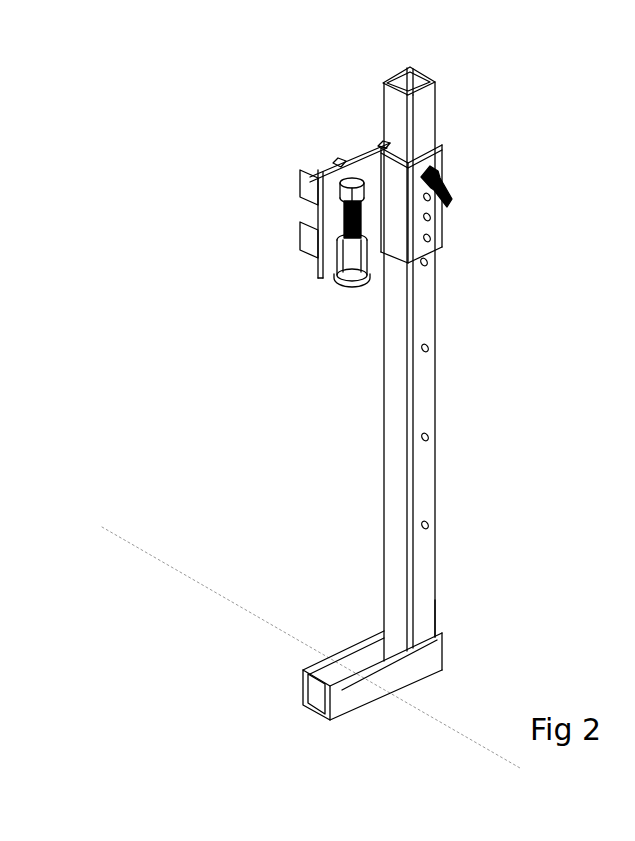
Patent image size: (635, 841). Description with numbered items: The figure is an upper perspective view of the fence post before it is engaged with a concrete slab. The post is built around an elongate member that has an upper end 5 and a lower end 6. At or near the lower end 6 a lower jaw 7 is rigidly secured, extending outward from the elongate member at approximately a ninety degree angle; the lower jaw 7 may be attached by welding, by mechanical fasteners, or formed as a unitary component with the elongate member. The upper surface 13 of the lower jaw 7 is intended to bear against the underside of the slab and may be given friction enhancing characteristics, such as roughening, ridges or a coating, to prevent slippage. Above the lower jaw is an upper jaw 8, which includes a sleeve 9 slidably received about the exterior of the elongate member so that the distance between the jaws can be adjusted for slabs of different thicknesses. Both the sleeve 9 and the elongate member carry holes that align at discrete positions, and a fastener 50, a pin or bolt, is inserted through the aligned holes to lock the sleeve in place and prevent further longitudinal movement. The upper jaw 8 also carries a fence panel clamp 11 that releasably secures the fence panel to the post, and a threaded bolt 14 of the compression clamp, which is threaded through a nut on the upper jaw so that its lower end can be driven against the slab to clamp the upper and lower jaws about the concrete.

The upper end 5 is at (437, 82).
The fastener 50 is at (445, 180).
The sleeve portion 9 is at (445, 227).
The threaded bolt 14 is at (440, 394).
The fence panel clamp 11 is at (296, 170).
The upper jaw 8 is at (323, 272).
The upper surface 13 is at (358, 640).
The lower end 6 is at (428, 627).
The lower jaw 7 is at (357, 704).